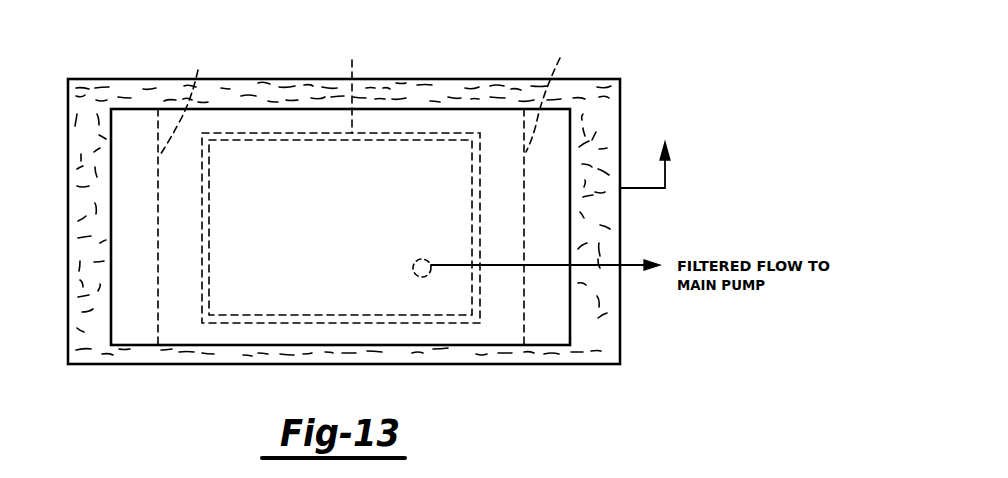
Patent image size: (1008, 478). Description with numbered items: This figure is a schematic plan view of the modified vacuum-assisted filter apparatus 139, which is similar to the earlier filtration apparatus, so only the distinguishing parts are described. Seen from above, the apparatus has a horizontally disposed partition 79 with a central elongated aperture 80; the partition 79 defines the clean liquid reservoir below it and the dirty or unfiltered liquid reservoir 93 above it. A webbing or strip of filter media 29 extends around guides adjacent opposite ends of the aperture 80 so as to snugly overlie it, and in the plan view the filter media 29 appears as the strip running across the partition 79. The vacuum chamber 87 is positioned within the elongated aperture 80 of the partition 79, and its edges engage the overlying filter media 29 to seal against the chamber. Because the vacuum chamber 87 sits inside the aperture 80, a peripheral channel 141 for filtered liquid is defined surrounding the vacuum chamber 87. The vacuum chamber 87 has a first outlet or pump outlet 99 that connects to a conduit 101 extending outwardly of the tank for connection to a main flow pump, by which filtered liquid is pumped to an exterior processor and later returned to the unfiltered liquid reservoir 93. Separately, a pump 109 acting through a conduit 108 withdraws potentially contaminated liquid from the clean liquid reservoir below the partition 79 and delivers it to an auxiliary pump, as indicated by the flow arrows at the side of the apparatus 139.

The vacuum-assisted filter apparatus 139 is at (70, 79).
The partition 79 is at (132, 217).
The unfiltered liquid reservoir 93 is at (160, 90).
The filter media 29 is at (373, 187).
The peripheral channel 141 is at (356, 83).
The vacuum chamber 87 is at (405, 160).
The central elongated aperture 80 is at (206, 285).
The pump outlet 99 is at (427, 258).
The conduit 101 is at (612, 260).
The conduit 108 is at (640, 188).
The pump 109 is at (768, 152).